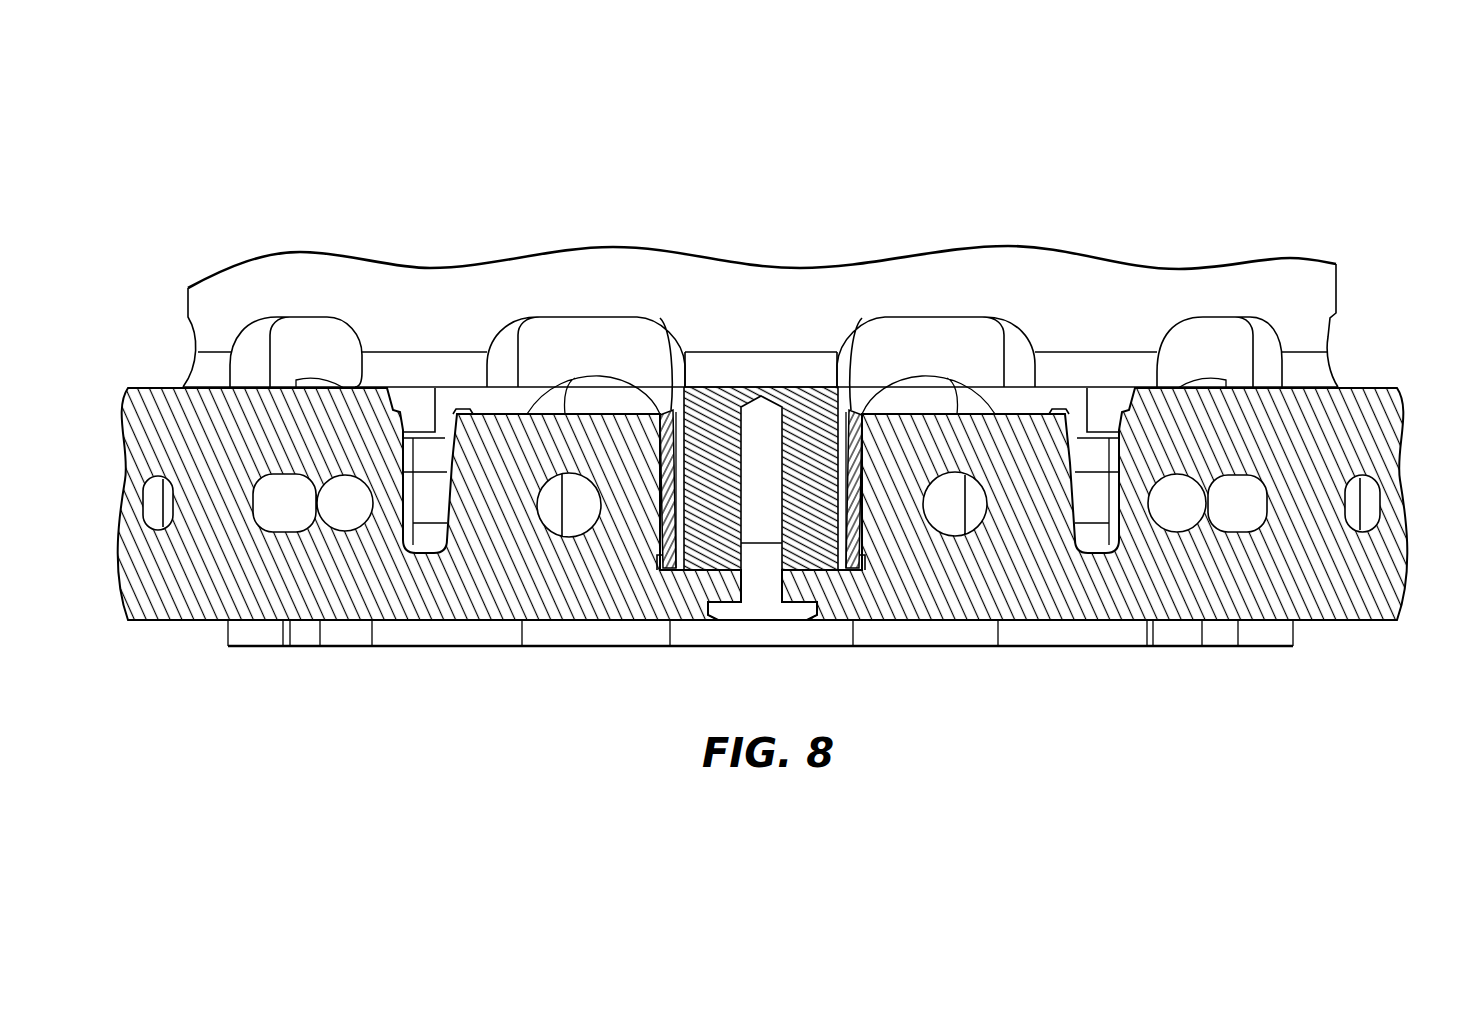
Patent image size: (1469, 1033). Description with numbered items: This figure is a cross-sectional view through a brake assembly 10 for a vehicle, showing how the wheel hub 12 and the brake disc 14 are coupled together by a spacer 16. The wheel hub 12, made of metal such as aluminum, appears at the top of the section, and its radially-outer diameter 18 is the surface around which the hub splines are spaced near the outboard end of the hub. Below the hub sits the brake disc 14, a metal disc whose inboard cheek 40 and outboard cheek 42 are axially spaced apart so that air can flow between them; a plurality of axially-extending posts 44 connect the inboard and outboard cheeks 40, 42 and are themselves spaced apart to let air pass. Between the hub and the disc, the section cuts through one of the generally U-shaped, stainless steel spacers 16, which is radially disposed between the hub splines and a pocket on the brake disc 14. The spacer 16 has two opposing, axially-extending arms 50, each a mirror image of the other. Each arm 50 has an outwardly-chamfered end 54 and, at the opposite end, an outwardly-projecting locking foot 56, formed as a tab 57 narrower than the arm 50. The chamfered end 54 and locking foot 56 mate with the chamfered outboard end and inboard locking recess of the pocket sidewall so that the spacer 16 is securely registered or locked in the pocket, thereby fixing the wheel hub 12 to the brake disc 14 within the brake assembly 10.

The brake assembly 10 is at (1222, 168).
The wheel hub 12 is at (1302, 282).
The brake disc 14 is at (1405, 415).
The spacer 16 is at (663, 533).
The radially-outer diameter 18 is at (188, 304).
The inboard cheek 40 is at (1360, 405).
The outboard cheek 42 is at (1340, 610).
The axially-extending post 44 is at (216, 505).
The arm 50 is at (673, 488).
The outwardly-chamfered end 54 is at (668, 412).
The outwardly-projecting locking foot 56 is at (666, 579).
The tab 57 is at (659, 557).